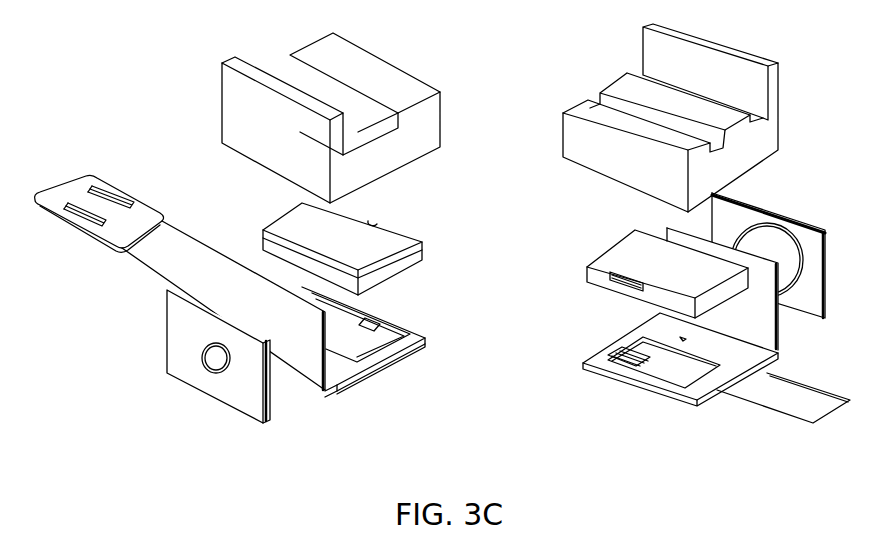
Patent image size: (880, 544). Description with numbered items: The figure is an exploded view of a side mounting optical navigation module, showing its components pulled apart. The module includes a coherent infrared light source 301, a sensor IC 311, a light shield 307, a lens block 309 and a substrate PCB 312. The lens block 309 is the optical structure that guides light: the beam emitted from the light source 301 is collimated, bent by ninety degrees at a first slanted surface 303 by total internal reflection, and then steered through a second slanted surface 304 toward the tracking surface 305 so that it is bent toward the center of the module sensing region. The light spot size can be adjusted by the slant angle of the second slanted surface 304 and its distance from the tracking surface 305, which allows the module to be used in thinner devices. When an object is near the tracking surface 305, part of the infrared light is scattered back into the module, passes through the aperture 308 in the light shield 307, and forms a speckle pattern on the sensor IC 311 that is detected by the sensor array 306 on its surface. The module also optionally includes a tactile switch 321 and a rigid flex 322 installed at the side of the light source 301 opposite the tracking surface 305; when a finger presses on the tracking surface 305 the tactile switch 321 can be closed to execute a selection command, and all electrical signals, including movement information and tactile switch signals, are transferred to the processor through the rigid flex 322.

The coherent infrared light source 301 is at (680, 337).
The first slanted surface 303 is at (350, 130).
The second slanted surface 304 is at (705, 140).
The tracking surface 305 is at (622, 180).
The sensor array 306 is at (540, 349).
The light shield 307 is at (505, 260).
The aperture 308 is at (610, 278).
The lens block 309 is at (587, 134).
The sensor IC 311 is at (357, 348).
The substrate PCB 312 is at (360, 381).
The tactile switch 321 is at (197, 360).
The rigid flex 322 is at (203, 280).